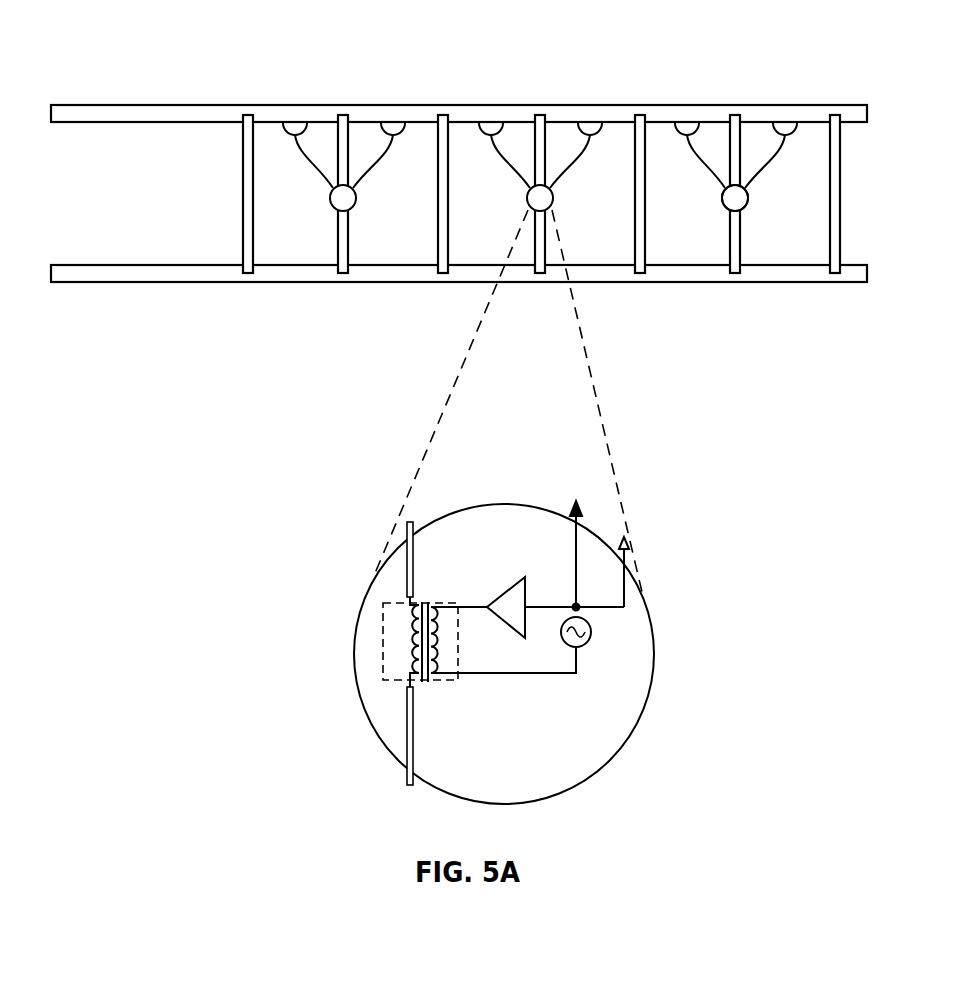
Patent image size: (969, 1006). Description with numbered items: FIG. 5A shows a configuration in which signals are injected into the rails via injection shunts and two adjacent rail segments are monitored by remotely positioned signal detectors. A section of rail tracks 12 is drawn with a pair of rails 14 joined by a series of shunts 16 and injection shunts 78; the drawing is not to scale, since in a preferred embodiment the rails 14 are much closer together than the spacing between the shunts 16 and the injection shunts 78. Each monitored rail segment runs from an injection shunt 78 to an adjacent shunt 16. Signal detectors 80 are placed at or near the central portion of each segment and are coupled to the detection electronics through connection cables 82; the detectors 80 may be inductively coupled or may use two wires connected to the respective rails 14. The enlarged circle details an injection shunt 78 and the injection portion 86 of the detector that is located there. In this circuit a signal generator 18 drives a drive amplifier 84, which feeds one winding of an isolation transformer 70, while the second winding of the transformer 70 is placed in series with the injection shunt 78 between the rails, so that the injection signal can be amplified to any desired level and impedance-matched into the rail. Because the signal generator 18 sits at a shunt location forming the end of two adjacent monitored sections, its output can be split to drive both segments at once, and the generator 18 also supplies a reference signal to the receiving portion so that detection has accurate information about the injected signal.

The rail tracks 12 is at (495, 78).
The rail 14 is at (65, 115).
The shunt 16 is at (243, 212).
The signal generator 18 is at (583, 646).
The transformer 70 is at (387, 658).
The injection shunt 78 is at (349, 258).
The signal detector 80 is at (296, 123).
The connection cable 82 is at (314, 168).
The drive amplifier 84 is at (517, 625).
The injection portion 86 is at (748, 203).